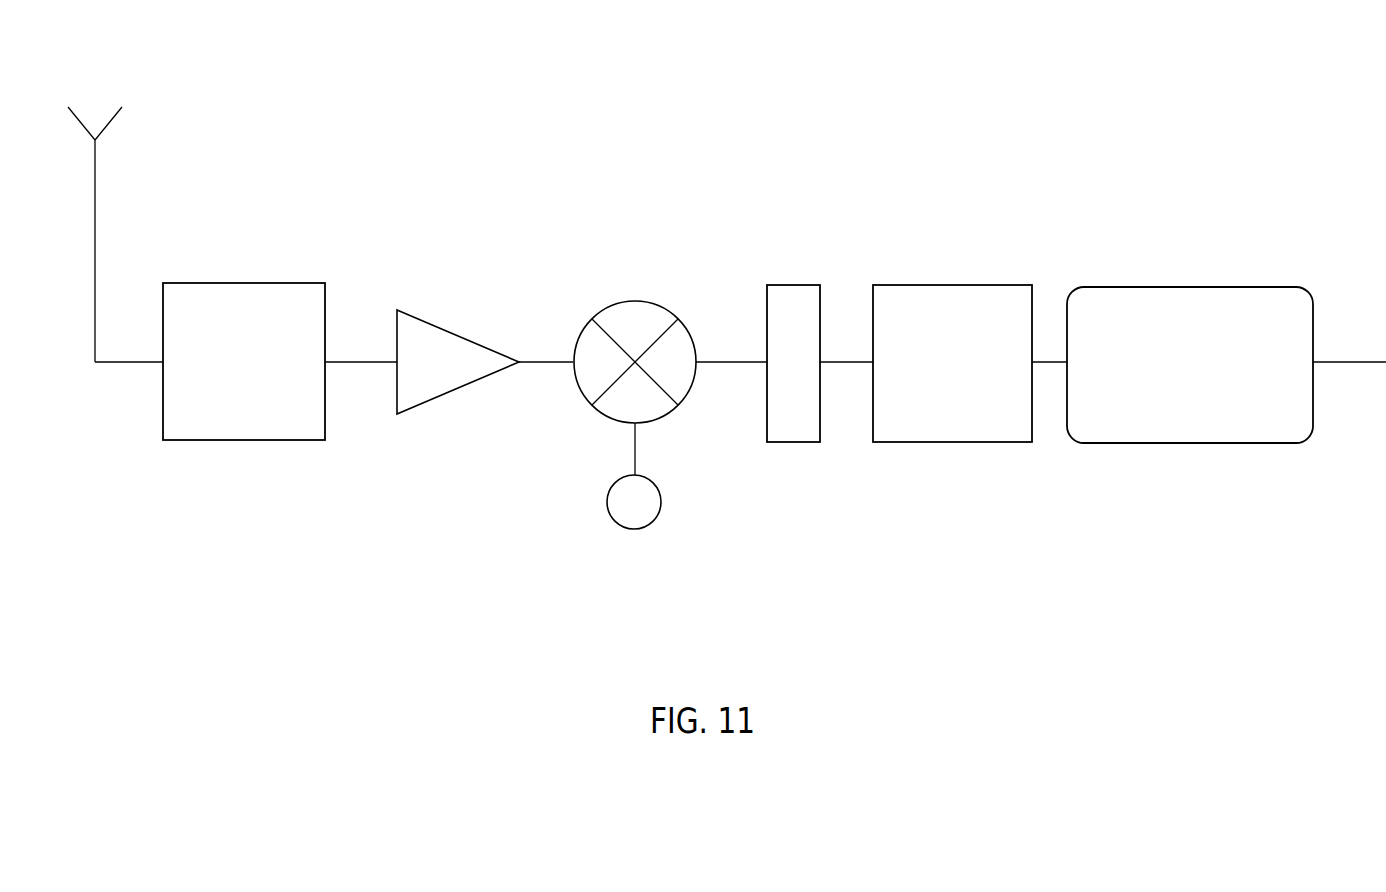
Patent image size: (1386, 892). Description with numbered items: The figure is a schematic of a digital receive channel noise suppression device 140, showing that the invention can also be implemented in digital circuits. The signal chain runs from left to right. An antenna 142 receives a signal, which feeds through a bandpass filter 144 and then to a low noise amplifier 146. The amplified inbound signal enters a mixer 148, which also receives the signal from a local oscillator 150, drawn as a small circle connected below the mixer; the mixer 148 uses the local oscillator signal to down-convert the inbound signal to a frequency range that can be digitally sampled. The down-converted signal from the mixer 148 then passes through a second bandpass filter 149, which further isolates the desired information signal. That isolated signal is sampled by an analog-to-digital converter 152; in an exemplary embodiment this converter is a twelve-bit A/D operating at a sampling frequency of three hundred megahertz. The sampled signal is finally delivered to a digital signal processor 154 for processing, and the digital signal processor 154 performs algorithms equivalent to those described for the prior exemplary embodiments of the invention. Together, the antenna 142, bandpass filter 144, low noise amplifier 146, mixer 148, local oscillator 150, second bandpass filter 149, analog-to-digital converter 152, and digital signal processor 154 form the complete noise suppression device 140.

The digital receive channel noise suppression device 140 is at (926, 151).
The antenna 142 is at (95, 115).
The bandpass filter 144 is at (290, 283).
The low noise amplifier 146 is at (442, 328).
The mixer 148 is at (652, 302).
The second bandpass filter 149 is at (808, 285).
The local oscillator 150 is at (658, 513).
The analog-to-digital converter 152 is at (1012, 285).
The digital signal processor 154 is at (1268, 287).